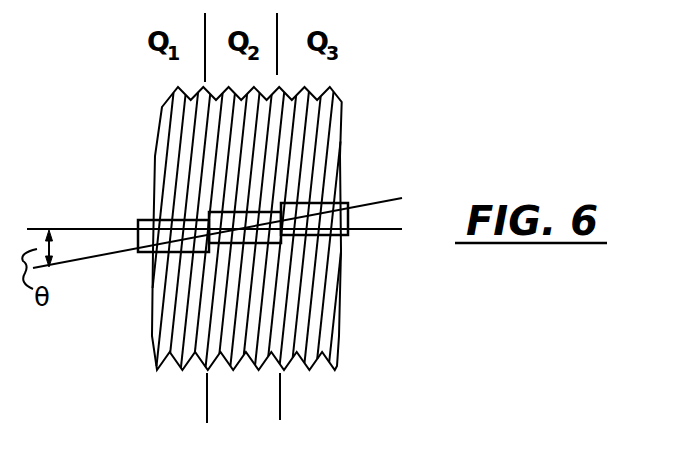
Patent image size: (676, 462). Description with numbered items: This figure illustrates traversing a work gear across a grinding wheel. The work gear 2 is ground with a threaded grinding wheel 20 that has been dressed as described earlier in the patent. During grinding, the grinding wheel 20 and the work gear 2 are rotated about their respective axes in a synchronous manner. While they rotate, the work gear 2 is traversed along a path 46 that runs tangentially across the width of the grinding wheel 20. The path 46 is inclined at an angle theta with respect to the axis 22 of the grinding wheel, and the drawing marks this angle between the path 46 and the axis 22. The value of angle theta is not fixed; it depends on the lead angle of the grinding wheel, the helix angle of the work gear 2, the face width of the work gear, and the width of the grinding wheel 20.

The work gear 2 is at (151, 221).
The threaded grinding wheel 20 is at (342, 130).
The axis of the grinding wheel 22 is at (378, 230).
The path 46 is at (110, 258).